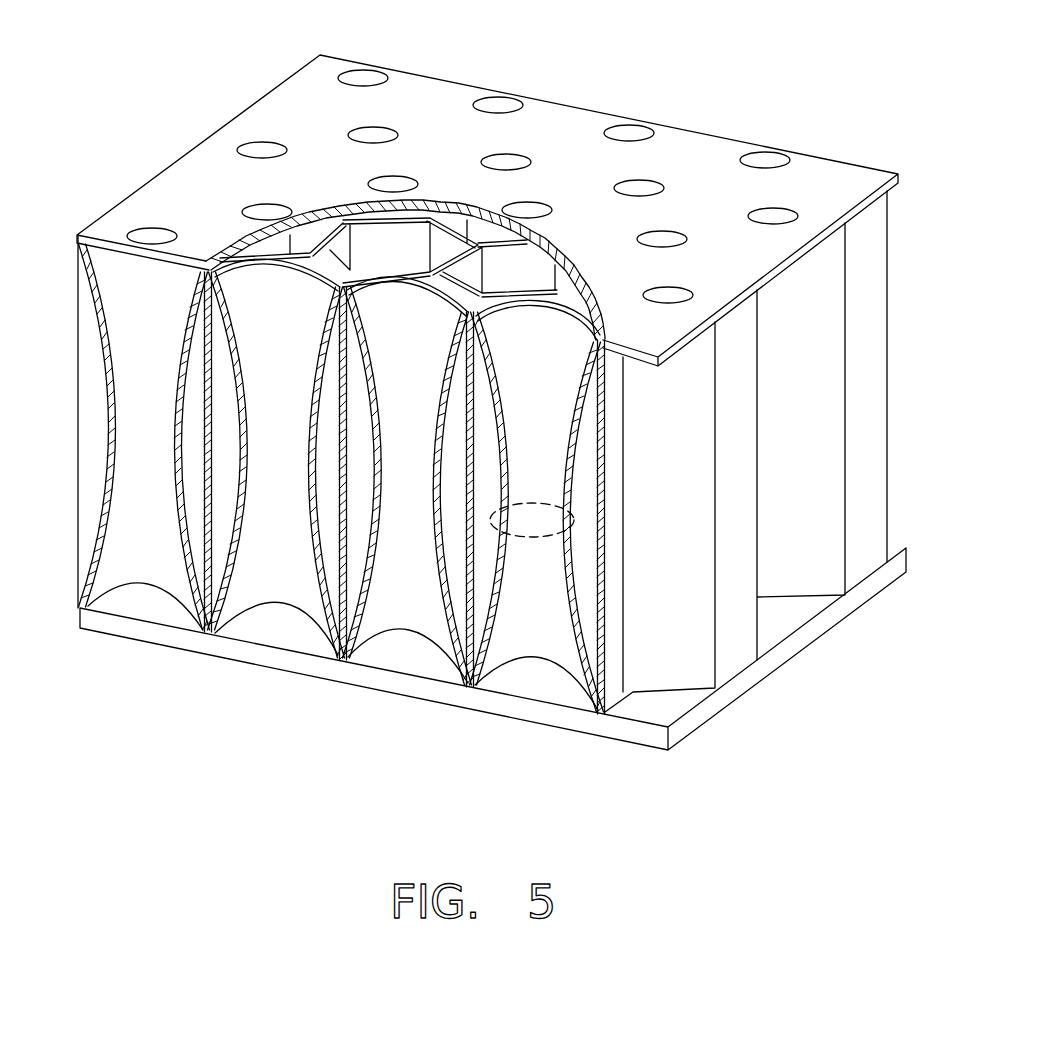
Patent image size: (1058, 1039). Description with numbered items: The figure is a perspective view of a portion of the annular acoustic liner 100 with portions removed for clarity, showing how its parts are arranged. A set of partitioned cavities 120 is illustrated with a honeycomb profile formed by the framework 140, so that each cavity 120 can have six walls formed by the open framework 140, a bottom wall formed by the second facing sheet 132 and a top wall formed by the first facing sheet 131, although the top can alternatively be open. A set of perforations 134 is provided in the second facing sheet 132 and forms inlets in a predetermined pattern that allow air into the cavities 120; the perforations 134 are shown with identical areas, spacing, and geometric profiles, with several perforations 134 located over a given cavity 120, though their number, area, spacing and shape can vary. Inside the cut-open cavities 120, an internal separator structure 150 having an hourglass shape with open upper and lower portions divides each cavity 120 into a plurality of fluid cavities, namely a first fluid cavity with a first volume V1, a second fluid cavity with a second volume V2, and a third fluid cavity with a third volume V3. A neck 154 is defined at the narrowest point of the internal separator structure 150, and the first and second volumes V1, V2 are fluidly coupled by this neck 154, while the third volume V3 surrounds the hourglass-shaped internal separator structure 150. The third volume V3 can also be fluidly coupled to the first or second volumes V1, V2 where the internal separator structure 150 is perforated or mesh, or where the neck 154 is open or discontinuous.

The annular acoustic liner 100 is at (478, 387).
The second facing sheet 132 is at (494, 210).
The perforations 134 is at (242, 155).
The first facing sheet 131 is at (805, 637).
The framework 140 is at (857, 535).
The partitioned cavities 120 is at (530, 612).
The internal separator structure 150 is at (313, 568).
The neck 154 is at (512, 503).
The first volume V1 is at (147, 330).
The third volume V3 is at (193, 440).
The second volume V2 is at (150, 547).